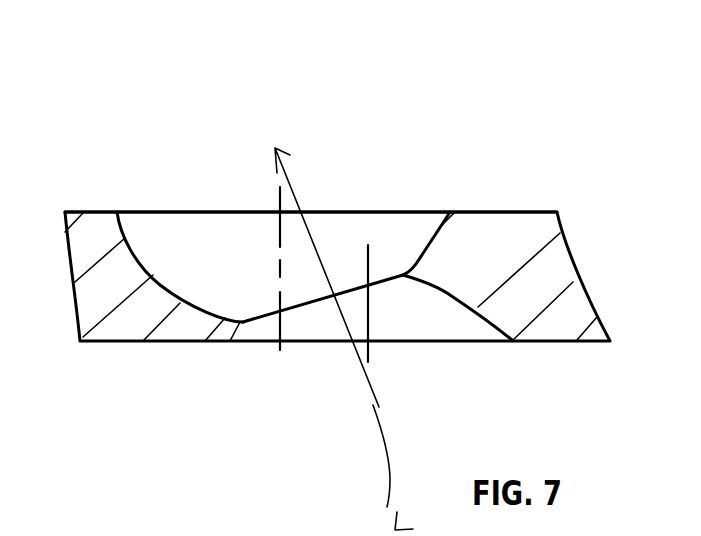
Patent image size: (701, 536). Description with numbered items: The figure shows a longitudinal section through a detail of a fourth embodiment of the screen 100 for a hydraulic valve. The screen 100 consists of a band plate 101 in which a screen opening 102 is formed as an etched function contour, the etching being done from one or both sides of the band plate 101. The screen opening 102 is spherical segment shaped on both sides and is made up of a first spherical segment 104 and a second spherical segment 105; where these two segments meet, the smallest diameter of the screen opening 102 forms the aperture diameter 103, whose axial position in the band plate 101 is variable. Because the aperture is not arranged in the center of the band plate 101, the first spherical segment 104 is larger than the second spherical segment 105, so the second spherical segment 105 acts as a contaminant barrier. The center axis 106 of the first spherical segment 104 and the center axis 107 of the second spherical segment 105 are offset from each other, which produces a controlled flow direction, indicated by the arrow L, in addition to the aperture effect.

The screen 100 is at (570, 88).
The band plate 101 is at (518, 220).
The screen opening 102 is at (382, 196).
The aperture diameter 103 is at (322, 298).
The first spherical segment 104 is at (145, 257).
The second spherical segment 105 is at (472, 308).
The center axis of the first spherical segment 106 is at (278, 228).
The center axis of the second spherical segment 107 is at (368, 352).